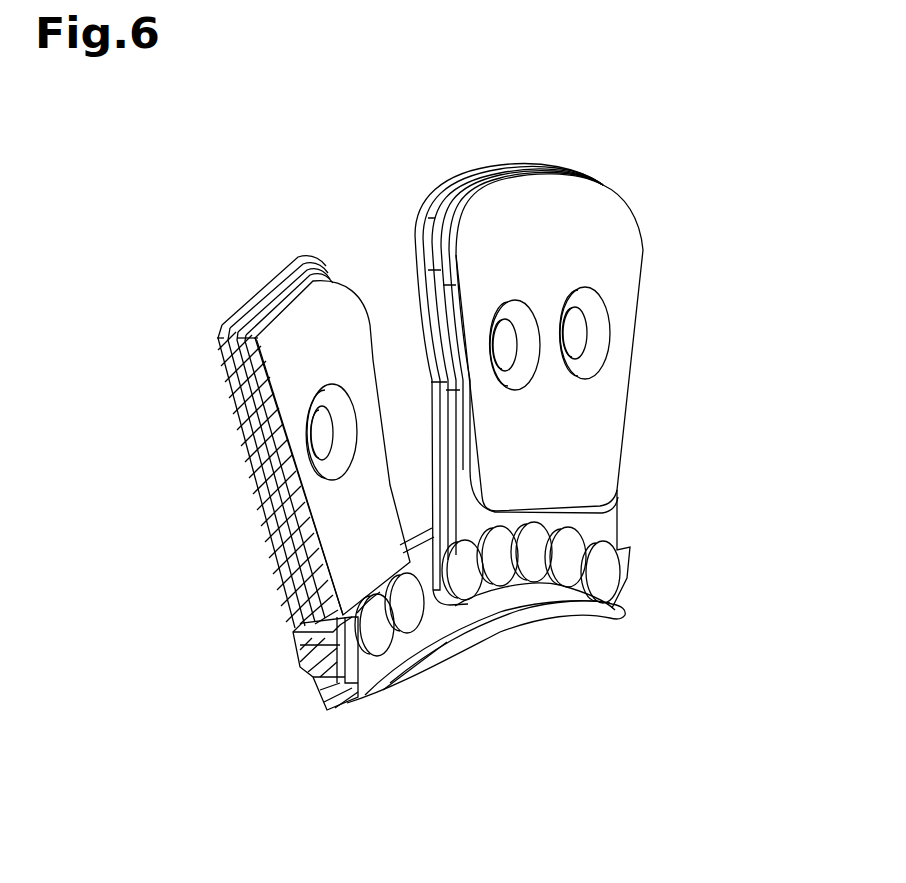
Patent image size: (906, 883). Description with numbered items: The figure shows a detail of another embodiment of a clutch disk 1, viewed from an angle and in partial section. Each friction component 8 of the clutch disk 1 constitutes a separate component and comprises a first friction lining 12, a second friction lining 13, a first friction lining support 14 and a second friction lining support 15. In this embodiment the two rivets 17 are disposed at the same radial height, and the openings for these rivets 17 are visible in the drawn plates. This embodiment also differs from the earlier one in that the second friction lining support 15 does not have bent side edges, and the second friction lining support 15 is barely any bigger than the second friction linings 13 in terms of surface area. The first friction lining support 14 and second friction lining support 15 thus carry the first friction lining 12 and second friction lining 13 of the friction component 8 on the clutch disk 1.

The clutch disk 1 is at (652, 138).
The friction component 8 is at (213, 383).
The first friction lining 12 is at (643, 250).
The second friction lining 13 is at (243, 443).
The first friction lining support 14 is at (502, 168).
The second friction lining support 15 is at (435, 178).
The rivet 17 is at (607, 333).